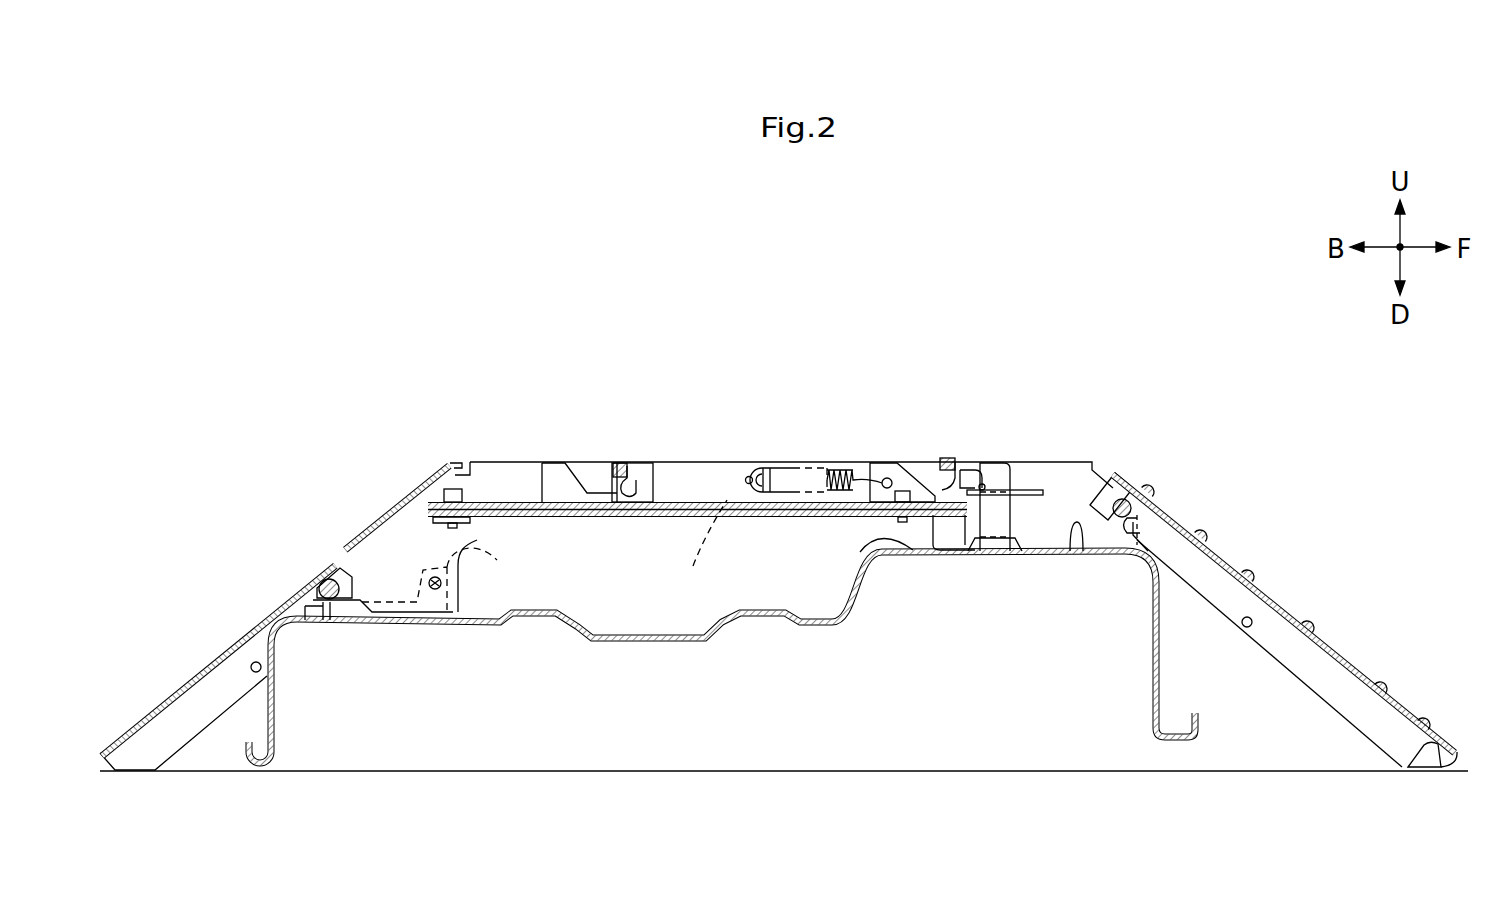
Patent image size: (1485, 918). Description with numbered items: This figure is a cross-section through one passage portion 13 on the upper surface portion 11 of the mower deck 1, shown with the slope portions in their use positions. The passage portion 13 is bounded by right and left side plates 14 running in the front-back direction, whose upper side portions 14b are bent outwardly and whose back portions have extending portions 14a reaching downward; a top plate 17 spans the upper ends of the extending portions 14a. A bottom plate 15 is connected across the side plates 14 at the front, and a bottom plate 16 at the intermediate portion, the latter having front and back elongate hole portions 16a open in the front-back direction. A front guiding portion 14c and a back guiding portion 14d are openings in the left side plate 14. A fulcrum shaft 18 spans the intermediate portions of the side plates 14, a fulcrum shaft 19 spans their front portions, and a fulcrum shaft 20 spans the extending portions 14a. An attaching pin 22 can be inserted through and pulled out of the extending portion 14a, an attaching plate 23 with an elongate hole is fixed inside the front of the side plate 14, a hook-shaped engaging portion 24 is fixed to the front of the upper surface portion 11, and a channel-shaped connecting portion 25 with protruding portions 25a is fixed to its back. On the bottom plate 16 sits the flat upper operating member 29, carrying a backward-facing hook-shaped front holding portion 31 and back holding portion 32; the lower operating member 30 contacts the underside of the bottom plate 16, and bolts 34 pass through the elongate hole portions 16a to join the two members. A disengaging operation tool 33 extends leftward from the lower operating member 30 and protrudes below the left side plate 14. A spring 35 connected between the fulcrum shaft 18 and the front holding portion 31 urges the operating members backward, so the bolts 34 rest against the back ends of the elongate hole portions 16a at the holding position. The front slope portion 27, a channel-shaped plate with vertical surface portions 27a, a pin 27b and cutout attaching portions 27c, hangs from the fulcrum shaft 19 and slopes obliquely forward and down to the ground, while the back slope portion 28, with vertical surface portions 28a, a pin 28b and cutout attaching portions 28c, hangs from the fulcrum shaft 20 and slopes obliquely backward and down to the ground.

The mower deck 1 is at (667, 640).
The upper surface portion 11 is at (870, 554).
The passage portion 13 is at (1073, 422).
The side plate 14 is at (718, 480).
The extending portion 14a is at (400, 560).
The upper side portion 14b is at (797, 470).
The front guiding portion 14c is at (948, 458).
The back guiding portion 14d is at (620, 466).
The bottom plate 15 is at (1076, 555).
The bottom plate 16 is at (965, 520).
The elongate hole portion 16a is at (485, 502).
The top plate 17 is at (410, 502).
The fulcrum shaft 18 is at (748, 470).
The fulcrum shaft 19 is at (1125, 500).
The fulcrum shaft 20 is at (323, 583).
The attaching pin 22 is at (435, 592).
The attaching plate 23 is at (1025, 490).
The hook-shaped engaging portion 24 is at (993, 468).
The connecting portion 25 is at (338, 614).
The protruding portion 25a is at (480, 552).
The front slope portion 27 is at (1282, 604).
The vertical surface portion 27a is at (1315, 670).
The pin 27b is at (1243, 627).
The attaching portion 27c is at (1142, 522).
The back slope portion 28 is at (183, 685).
The vertical surface portion 28a is at (170, 728).
The pin 28b is at (250, 664).
The attaching portion 28c is at (310, 604).
The upper operating member 29 is at (525, 502).
The lower operating member 30 is at (612, 520).
The front holding portion 31 is at (966, 468).
The back holding portion 32 is at (644, 468).
The disengaging operation tool 33 is at (705, 550).
The bolt 34 is at (452, 489).
The spring 35 is at (840, 472).